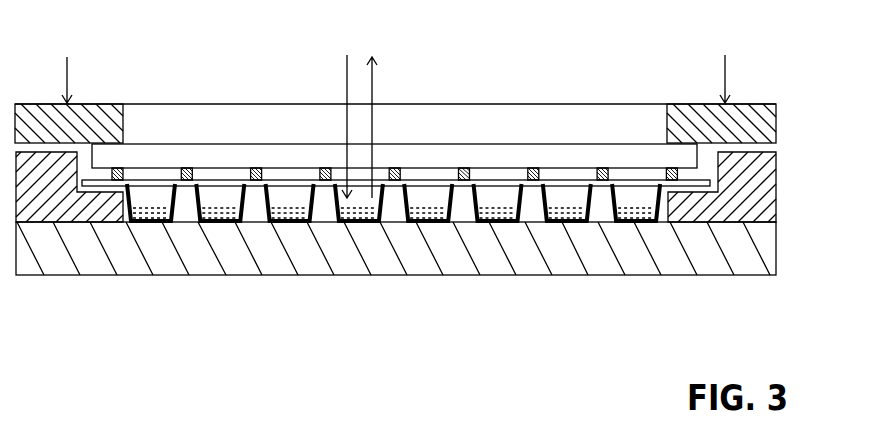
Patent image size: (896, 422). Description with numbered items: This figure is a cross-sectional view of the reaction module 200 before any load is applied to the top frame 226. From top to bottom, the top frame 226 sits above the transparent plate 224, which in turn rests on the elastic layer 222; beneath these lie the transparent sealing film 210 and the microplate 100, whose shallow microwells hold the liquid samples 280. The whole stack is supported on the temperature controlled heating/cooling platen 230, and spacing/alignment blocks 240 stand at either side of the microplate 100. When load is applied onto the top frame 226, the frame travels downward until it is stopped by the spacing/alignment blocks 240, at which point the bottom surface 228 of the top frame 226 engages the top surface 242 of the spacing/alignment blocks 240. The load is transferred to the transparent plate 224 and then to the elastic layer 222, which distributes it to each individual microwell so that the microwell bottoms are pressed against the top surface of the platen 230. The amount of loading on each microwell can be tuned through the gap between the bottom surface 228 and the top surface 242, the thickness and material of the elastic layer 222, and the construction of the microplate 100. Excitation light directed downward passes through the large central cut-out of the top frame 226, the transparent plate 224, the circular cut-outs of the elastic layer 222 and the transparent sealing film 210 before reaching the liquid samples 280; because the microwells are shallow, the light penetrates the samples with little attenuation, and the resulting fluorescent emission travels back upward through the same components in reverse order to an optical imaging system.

The microplate 100 is at (593, 200).
The reaction module 200 is at (149, 352).
The transparent sealing film 210 is at (296, 180).
The elastic layer 222 is at (402, 173).
The transparent plate 224 is at (217, 143).
The top frame 226 is at (668, 103).
The bottom surface of the top frame 228 is at (757, 138).
The temperature controlled heating/cooling platen 230 is at (280, 274).
The spacing/alignment blocks 240 is at (55, 193).
The top surface of spacing/alignment blocks 242 is at (757, 148).
The liquid samples 280 is at (573, 205).